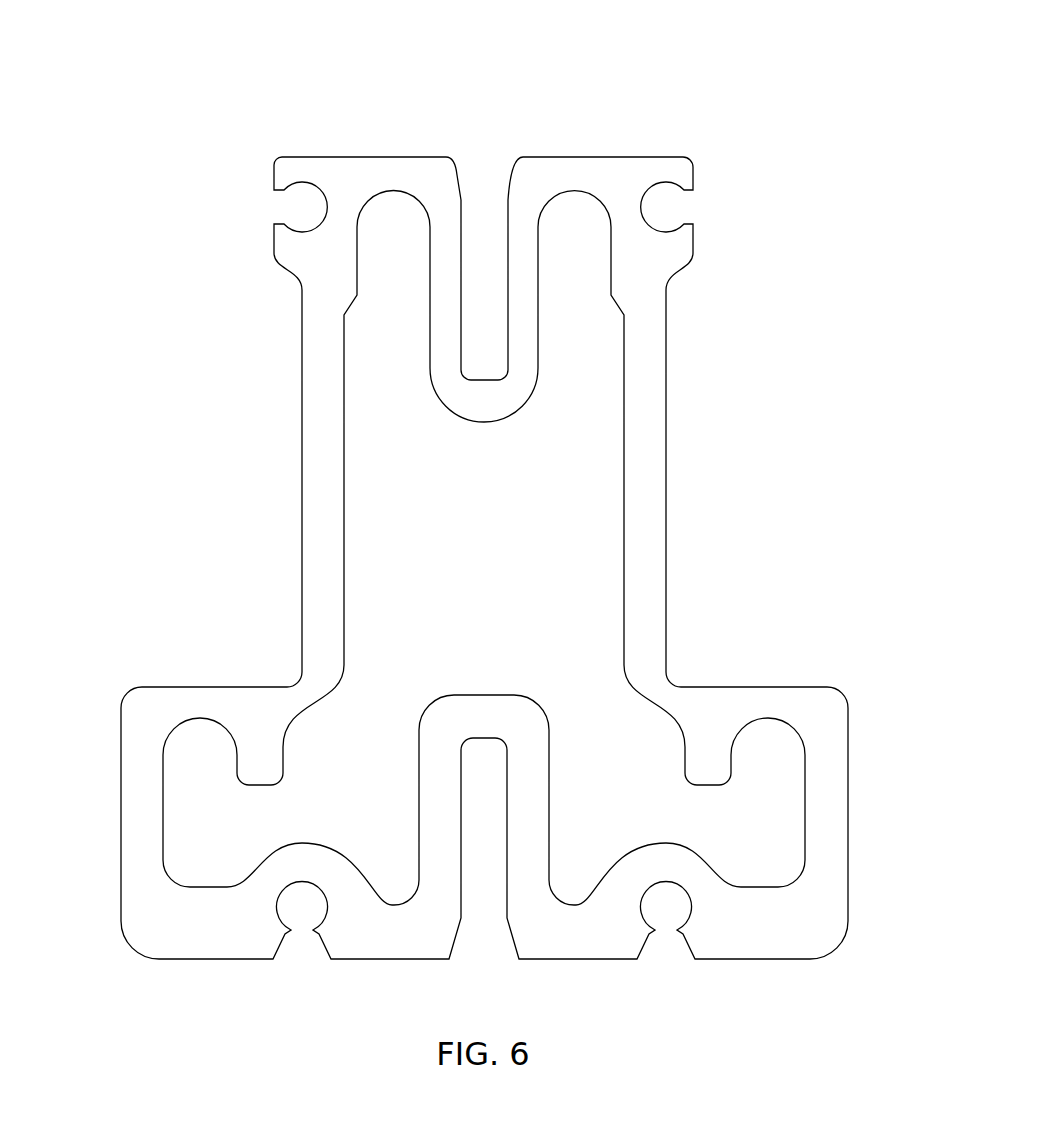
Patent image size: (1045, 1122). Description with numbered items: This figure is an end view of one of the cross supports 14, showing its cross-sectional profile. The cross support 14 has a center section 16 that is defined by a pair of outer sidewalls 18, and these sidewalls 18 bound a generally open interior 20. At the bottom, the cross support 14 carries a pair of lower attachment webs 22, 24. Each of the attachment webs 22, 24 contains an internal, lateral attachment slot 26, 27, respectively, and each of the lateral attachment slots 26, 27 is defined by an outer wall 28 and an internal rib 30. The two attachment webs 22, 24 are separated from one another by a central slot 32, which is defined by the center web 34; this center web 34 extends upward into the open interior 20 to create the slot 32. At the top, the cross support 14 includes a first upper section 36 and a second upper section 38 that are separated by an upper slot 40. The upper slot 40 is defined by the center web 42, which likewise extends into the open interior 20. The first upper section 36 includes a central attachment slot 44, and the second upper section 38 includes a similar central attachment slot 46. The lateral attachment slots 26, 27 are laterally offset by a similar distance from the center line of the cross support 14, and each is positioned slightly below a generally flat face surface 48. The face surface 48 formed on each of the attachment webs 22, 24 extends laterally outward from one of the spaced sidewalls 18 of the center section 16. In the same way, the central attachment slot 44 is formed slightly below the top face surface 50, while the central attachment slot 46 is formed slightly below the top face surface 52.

The cross support 14 is at (702, 493).
The center section 16 is at (667, 550).
The outer sidewalls 18 is at (313, 443).
The open interior 20 is at (439, 514).
The lower attachment web 22 is at (120, 750).
The lower attachment web 24 is at (850, 740).
The lateral attachment slot 26 is at (203, 747).
The lateral attachment slot 27 is at (772, 745).
The outer wall 28 is at (138, 802).
The internal rib 30 is at (278, 757).
The central slot 32 is at (490, 950).
The center web 34 is at (443, 727).
The first upper section 36 is at (347, 177).
The second upper section 38 is at (610, 175).
The upper slot 40 is at (485, 188).
The center web 42 is at (493, 405).
The central attachment slot 44 is at (392, 222).
The central attachment slot 46 is at (578, 230).
The face surface 48 is at (164, 687).
The top face surface 50 is at (295, 155).
The top face surface 52 is at (667, 155).